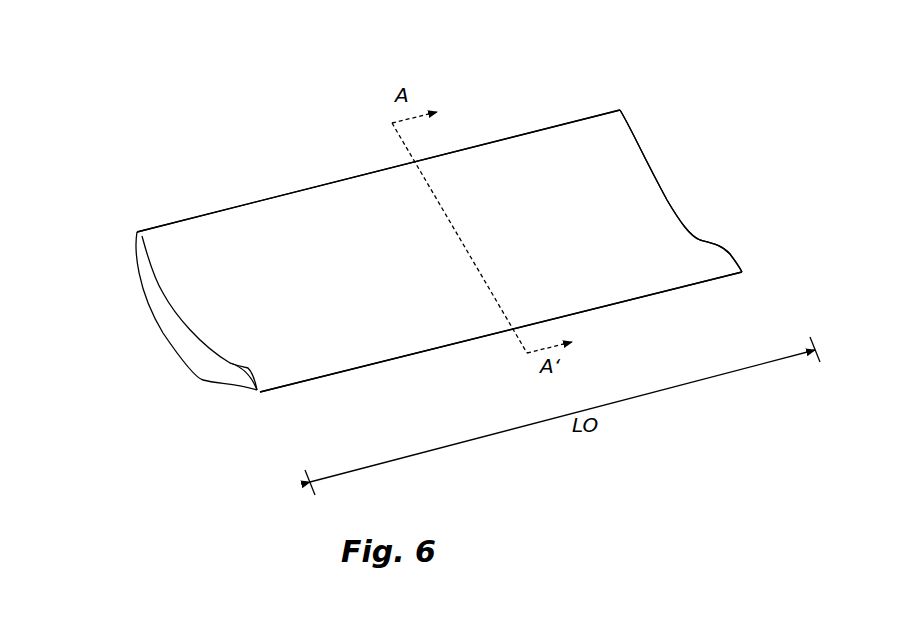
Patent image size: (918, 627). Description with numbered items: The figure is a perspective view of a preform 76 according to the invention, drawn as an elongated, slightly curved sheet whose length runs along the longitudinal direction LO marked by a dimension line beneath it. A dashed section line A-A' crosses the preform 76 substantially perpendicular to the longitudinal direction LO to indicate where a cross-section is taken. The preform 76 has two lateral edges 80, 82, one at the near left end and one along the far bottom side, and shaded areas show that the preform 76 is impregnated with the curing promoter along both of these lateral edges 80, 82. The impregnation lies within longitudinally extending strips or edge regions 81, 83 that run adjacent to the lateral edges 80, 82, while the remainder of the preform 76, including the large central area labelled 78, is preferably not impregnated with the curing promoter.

The preform 76 is at (318, 110).
The top surface 78 is at (598, 218).
The lateral edge 80 is at (158, 227).
The edge region 81 is at (137, 236).
The lateral edge 82 is at (676, 288).
The edge region 83 is at (245, 380).